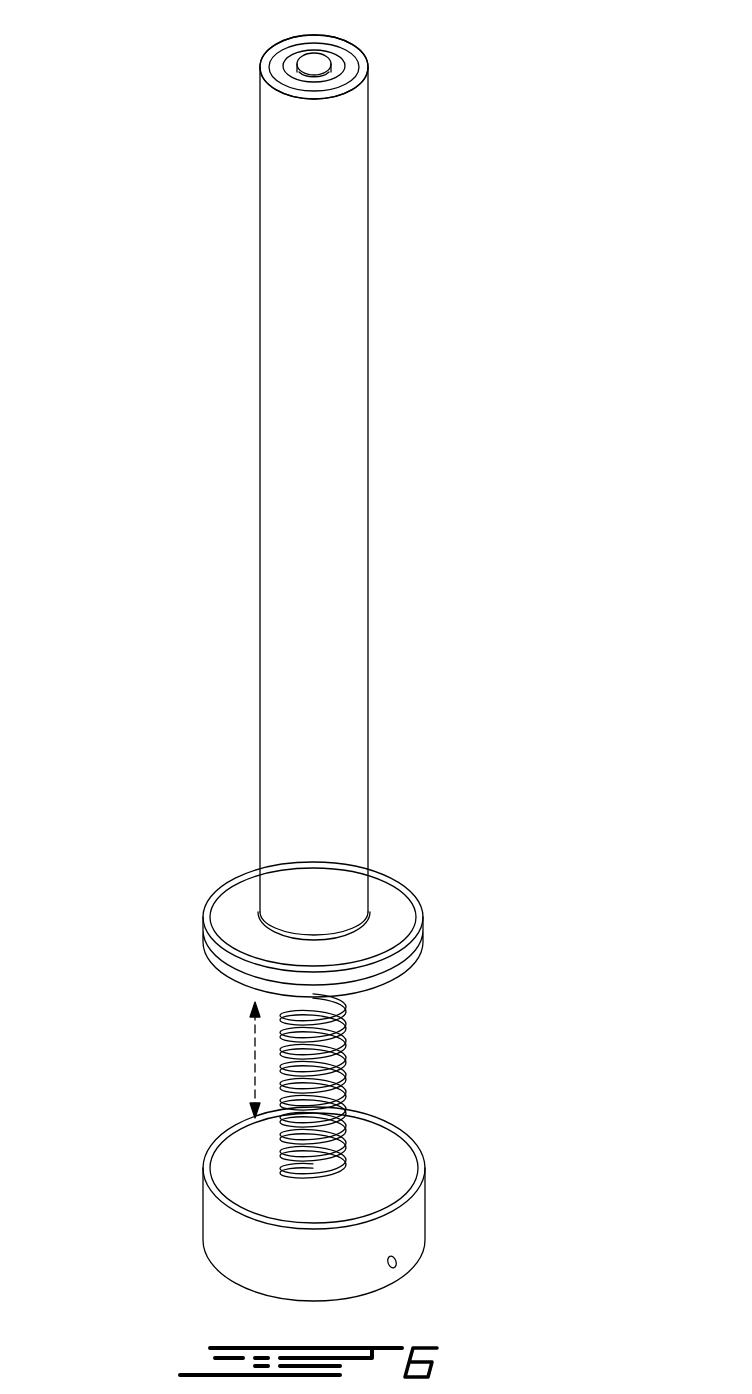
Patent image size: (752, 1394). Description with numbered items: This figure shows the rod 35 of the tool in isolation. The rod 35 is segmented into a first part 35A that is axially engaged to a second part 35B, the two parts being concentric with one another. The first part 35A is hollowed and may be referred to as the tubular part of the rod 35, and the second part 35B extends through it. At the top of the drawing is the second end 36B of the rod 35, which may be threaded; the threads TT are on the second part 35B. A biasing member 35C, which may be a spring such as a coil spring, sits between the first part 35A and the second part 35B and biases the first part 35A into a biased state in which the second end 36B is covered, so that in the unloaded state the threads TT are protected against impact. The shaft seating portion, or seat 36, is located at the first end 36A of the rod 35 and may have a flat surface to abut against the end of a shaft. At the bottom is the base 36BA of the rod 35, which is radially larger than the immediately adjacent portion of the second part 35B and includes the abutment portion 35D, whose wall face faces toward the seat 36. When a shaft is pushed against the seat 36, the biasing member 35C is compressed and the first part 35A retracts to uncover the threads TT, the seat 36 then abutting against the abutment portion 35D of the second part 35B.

The rod 35 is at (506, 113).
The first part 35A is at (345, 303).
The second part 35B is at (327, 1051).
The biasing member 35C is at (338, 1088).
The abutment portion 35D is at (390, 1163).
The shaft seating portion 36 is at (398, 918).
The first end 36A is at (155, 1197).
The second end 36B is at (336, 61).
The base 36BA is at (410, 1229).
The threads TT is at (283, 43).